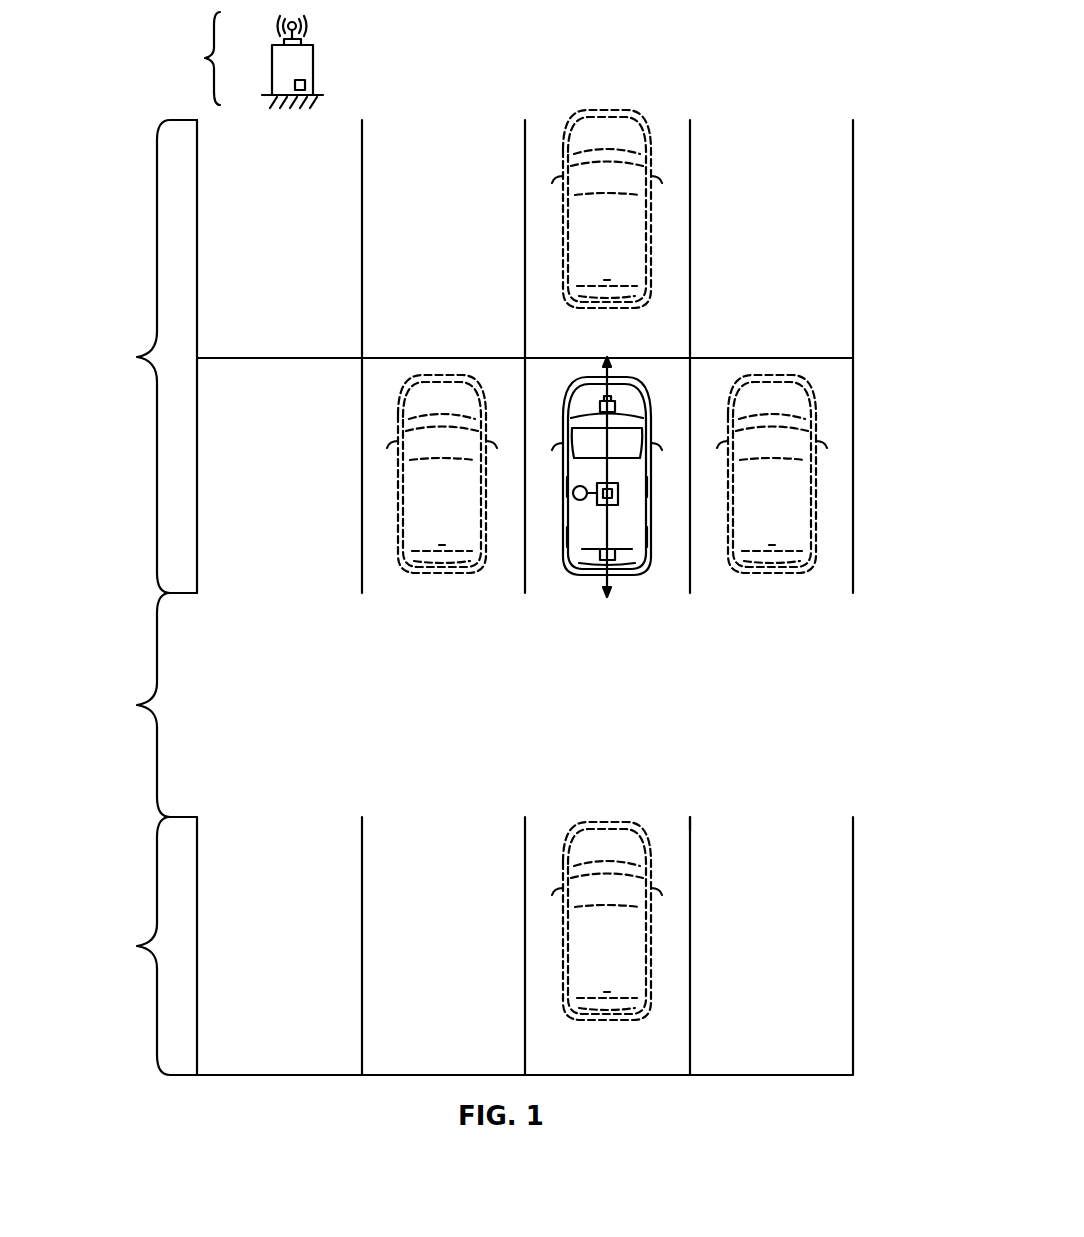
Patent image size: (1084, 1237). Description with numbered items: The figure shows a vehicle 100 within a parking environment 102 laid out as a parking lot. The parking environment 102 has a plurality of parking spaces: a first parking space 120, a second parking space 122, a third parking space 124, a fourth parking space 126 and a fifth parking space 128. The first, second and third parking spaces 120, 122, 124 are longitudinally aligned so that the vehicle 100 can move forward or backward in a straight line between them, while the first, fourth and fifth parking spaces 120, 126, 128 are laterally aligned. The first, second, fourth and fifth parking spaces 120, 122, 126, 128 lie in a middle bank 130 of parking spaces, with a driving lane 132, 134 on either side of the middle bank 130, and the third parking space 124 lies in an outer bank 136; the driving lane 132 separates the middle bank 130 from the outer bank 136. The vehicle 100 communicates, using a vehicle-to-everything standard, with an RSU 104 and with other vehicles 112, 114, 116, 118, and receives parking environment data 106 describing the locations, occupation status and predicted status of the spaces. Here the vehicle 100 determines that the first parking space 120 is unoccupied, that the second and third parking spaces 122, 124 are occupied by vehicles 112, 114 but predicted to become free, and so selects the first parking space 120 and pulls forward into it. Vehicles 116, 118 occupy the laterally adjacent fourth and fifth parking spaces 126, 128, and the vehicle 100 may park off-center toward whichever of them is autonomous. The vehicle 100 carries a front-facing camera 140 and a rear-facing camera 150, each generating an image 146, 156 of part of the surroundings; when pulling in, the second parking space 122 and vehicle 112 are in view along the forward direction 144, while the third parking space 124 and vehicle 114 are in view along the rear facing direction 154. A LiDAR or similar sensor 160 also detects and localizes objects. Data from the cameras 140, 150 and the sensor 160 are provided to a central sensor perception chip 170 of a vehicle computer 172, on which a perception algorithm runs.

The vehicle 100 is at (647, 567).
The parking environment 102 is at (587, 82).
The RSU 104 is at (305, 52).
The parking environment data 106 is at (304, 84).
The vehicle 112 is at (563, 212).
The vehicle 114 is at (650, 906).
The vehicle 116 is at (400, 462).
The vehicle 118 is at (817, 428).
The first parking space 120 is at (572, 599).
The second parking space 122 is at (662, 117).
The third parking space 124 is at (646, 816).
The fourth parking space 126 is at (420, 592).
The fifth parking space 128 is at (795, 592).
The middle bank 130 is at (140, 356).
The driving lane 132 is at (142, 705).
The driving lane 134 is at (185, 58).
The outer bank 136 is at (143, 946).
The camera 140 is at (598, 404).
The forward direction 144 is at (613, 364).
The image 146 is at (608, 445).
The camera 150 is at (585, 558).
The rear facing direction 154 is at (610, 580).
The image 156 is at (608, 524).
The sensor 160 is at (573, 494).
The central sensor perception chip 170 is at (620, 490).
The vehicle computer 172 is at (620, 500).